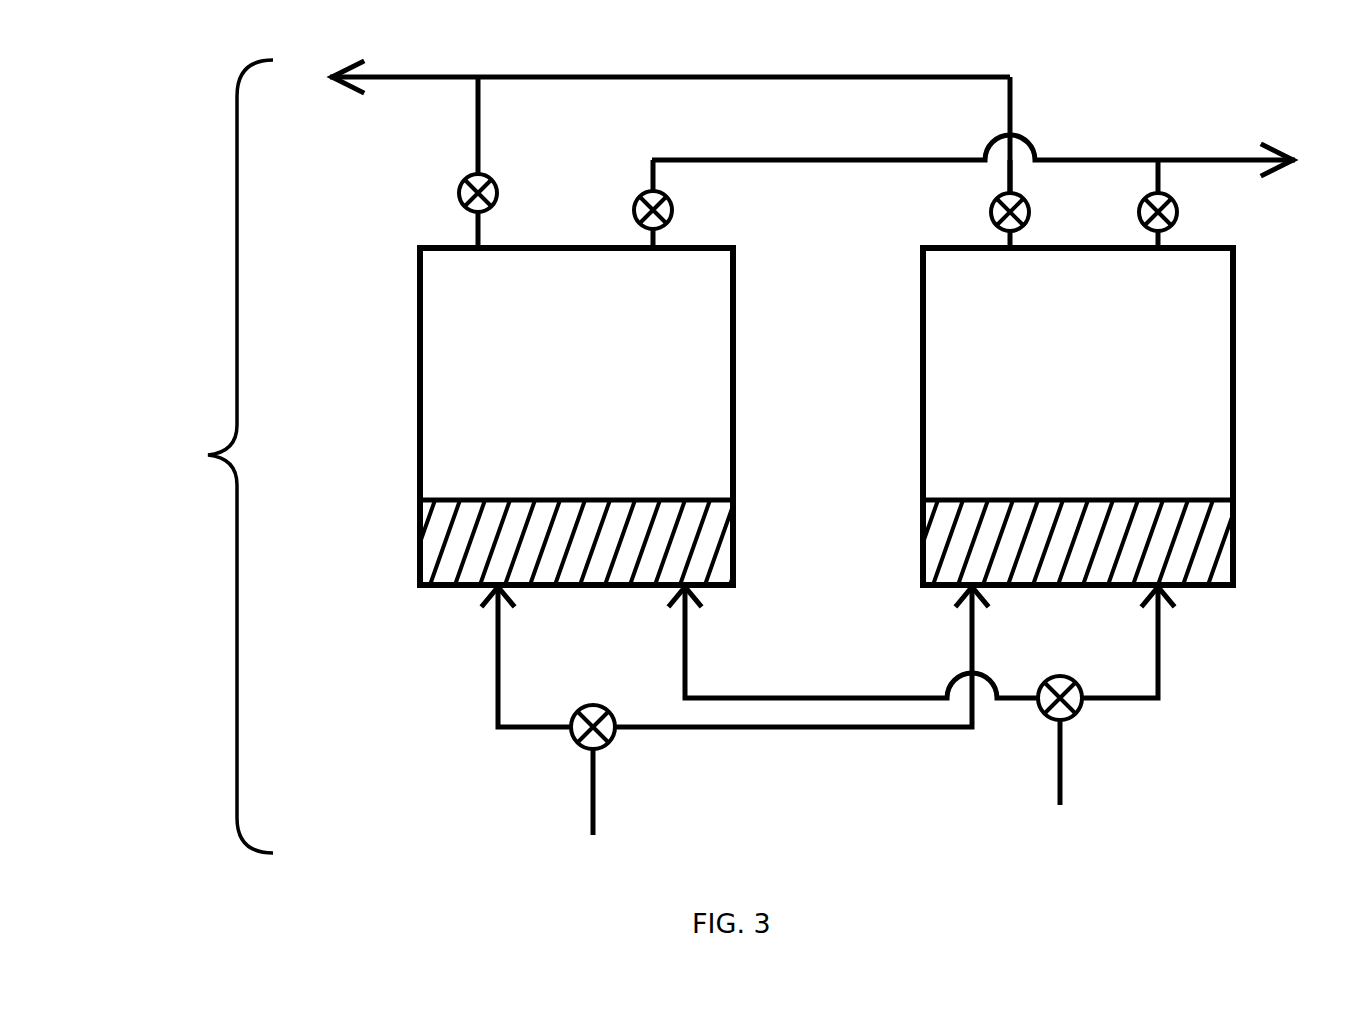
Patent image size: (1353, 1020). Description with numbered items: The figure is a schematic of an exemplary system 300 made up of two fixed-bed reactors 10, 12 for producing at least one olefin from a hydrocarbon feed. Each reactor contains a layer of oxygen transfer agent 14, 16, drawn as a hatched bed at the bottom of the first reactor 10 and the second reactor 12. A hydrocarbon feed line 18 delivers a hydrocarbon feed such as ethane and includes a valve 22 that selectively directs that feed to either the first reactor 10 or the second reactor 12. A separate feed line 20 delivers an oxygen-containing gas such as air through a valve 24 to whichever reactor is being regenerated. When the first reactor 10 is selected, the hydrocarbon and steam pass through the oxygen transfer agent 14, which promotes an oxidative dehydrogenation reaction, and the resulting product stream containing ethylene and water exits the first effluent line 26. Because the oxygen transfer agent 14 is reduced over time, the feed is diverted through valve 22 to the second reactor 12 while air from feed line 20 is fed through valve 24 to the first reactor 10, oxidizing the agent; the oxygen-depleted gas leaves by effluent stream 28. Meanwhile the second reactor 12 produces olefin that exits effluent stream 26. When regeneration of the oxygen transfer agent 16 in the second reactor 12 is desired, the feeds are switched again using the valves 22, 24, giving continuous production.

The system 300 is at (208, 455).
The first reactor 10 is at (420, 310).
The second reactor 12 is at (1235, 289).
The layer of oxygen transfer agent 14 is at (503, 497).
The layer of oxygen transfer agent 16 is at (1100, 500).
The hydrocarbon feed line 18 is at (588, 806).
The feed line 20 is at (1068, 790).
The valve 22 is at (578, 710).
The valve 24 is at (1080, 688).
The first effluent line 26 is at (432, 72).
The effluent stream 28 is at (1198, 157).